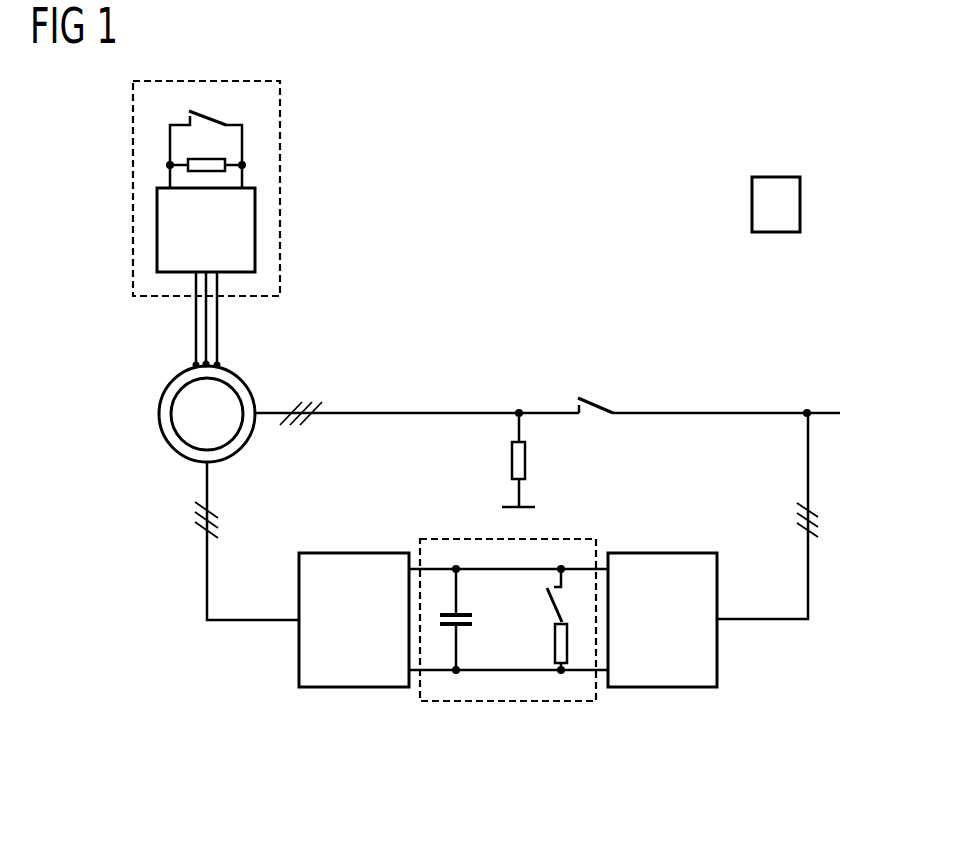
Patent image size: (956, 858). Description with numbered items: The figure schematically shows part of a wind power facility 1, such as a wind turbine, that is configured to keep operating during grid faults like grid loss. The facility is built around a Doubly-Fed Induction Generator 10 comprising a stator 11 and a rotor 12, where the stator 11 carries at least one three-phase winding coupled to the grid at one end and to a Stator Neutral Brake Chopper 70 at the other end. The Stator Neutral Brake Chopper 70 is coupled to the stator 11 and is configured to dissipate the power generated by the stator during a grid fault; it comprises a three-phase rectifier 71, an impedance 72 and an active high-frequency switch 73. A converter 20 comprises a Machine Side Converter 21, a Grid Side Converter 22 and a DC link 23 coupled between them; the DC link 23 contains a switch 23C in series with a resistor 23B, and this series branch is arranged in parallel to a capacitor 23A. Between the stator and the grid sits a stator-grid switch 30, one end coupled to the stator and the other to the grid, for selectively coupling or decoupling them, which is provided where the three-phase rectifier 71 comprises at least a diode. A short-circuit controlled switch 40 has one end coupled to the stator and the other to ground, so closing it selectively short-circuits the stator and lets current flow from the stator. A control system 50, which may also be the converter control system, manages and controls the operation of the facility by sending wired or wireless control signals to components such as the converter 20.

The wind power facility 1 is at (607, 170).
The Doubly-Fed Induction Generator 10 is at (157, 376).
The stator 11 is at (159, 414).
The rotor 12 is at (175, 432).
The converter 20 is at (662, 724).
The Machine Side Converter 21 is at (299, 663).
The Grid Side Converter 22 is at (717, 661).
The DC link 23 is at (465, 539).
The capacitor 23A is at (450, 628).
The resistor 23B is at (568, 645).
The switch 23C is at (545, 607).
The stator-grid switch 30 is at (603, 379).
The short-circuit controlled switch 40 is at (535, 458).
The control system 50 is at (800, 204).
The Stator Neutral Brake Chopper 70 is at (133, 197).
The three-phase rectifier 71 is at (258, 230).
The impedance 72 is at (220, 160).
The active high-frequency switch 73 is at (222, 112).